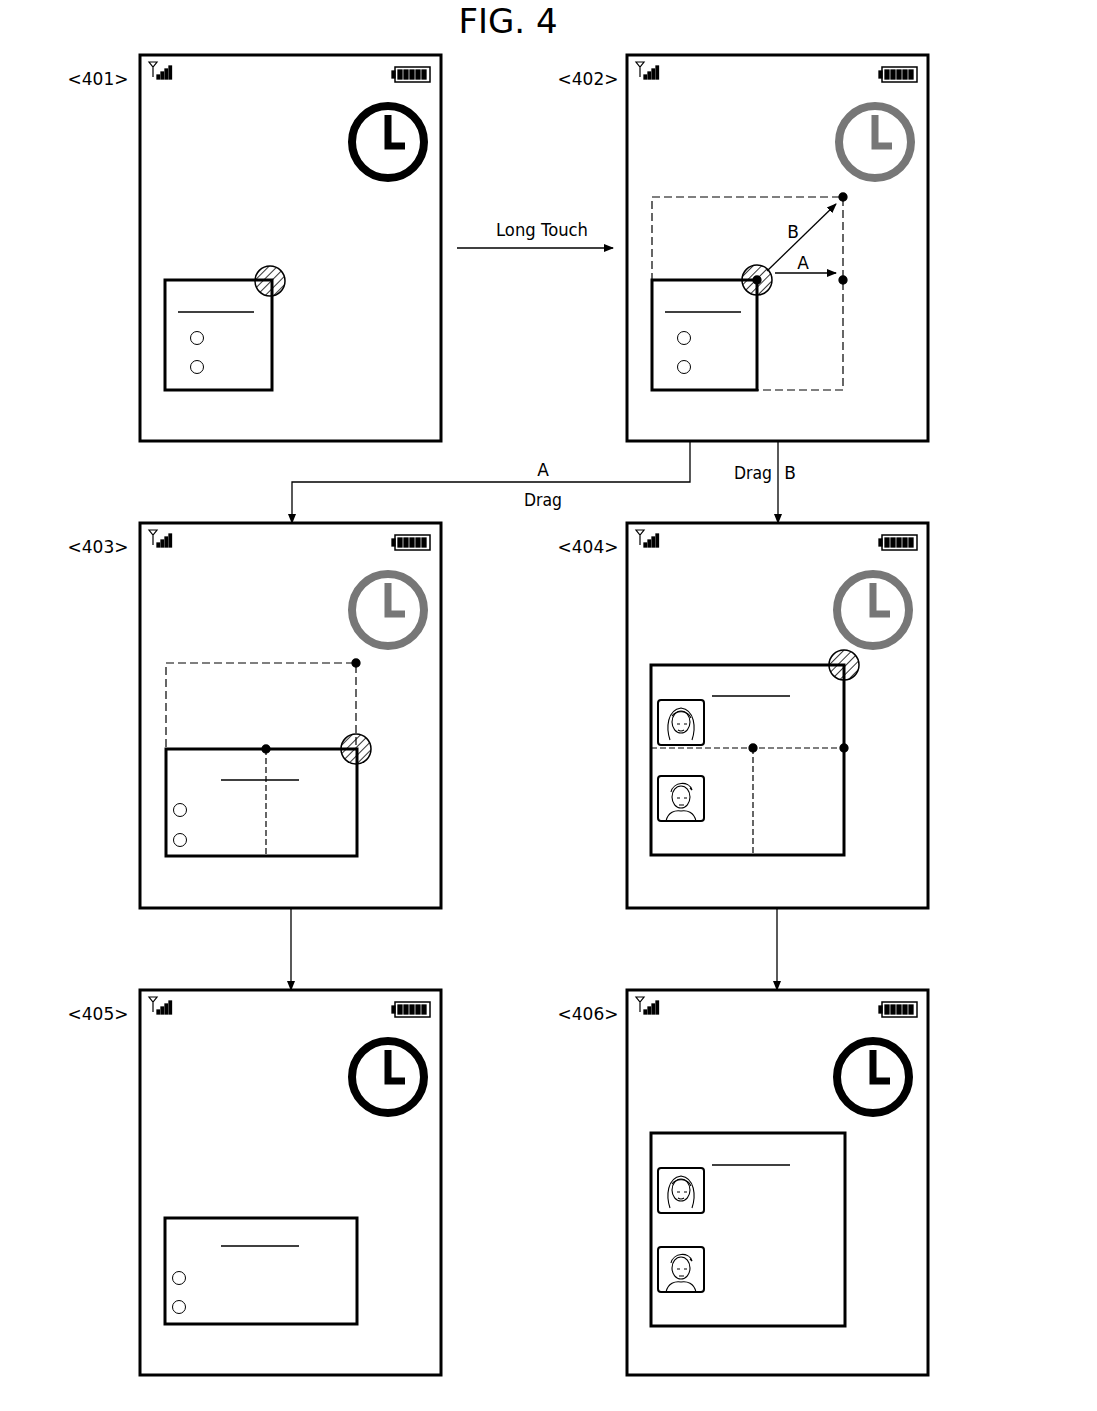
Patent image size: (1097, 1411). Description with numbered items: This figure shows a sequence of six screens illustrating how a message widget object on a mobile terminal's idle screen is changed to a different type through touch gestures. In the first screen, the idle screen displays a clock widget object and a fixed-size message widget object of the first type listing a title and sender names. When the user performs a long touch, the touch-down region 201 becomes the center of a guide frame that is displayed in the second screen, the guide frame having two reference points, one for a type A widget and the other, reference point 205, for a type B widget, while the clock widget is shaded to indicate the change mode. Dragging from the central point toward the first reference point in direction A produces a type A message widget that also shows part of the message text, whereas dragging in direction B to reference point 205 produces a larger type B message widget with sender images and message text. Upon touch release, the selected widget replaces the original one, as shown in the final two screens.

The region at which the touch-down event has occurred 201 is at (282, 271).
The reference point 205 is at (850, 197).